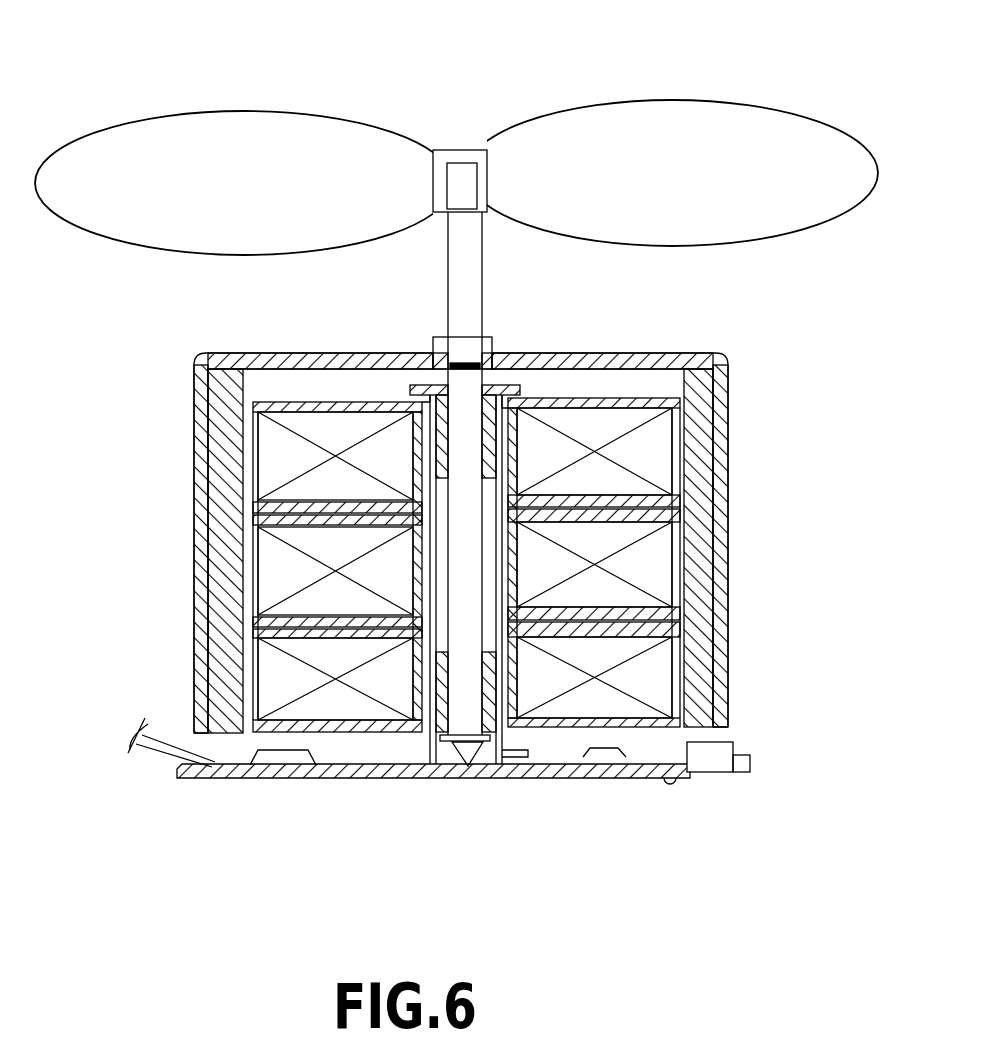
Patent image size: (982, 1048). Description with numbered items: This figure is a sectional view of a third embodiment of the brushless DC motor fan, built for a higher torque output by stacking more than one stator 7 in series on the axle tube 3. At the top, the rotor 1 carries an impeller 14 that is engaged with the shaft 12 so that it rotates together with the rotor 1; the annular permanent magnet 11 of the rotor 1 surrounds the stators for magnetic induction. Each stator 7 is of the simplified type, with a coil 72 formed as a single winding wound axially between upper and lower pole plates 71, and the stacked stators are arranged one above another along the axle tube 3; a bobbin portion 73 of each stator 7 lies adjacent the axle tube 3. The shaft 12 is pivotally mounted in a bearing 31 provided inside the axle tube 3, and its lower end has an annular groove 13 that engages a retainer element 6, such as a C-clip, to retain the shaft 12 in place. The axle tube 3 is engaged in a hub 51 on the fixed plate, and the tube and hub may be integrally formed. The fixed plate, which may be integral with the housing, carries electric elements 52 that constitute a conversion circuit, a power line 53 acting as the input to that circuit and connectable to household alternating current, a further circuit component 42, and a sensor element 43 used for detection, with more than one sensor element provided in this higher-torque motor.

The rotor 1 is at (730, 362).
The axle tube 3 is at (515, 392).
The retainer element 6 is at (455, 778).
The stator 7 is at (283, 397).
The permanent magnet 11 is at (705, 557).
The shaft 12 is at (468, 697).
The annular groove 13 is at (432, 800).
The impeller 14 is at (712, 108).
The bearing 31 is at (432, 372).
The circuit component 42 is at (288, 757).
The sensor element 43 is at (713, 758).
The hub 51 is at (425, 768).
The electric elements 52 is at (613, 753).
The power line 53 is at (150, 728).
The pole plates 71 is at (637, 397).
The coil 72 is at (657, 432).
The bobbin core 73 is at (522, 437).